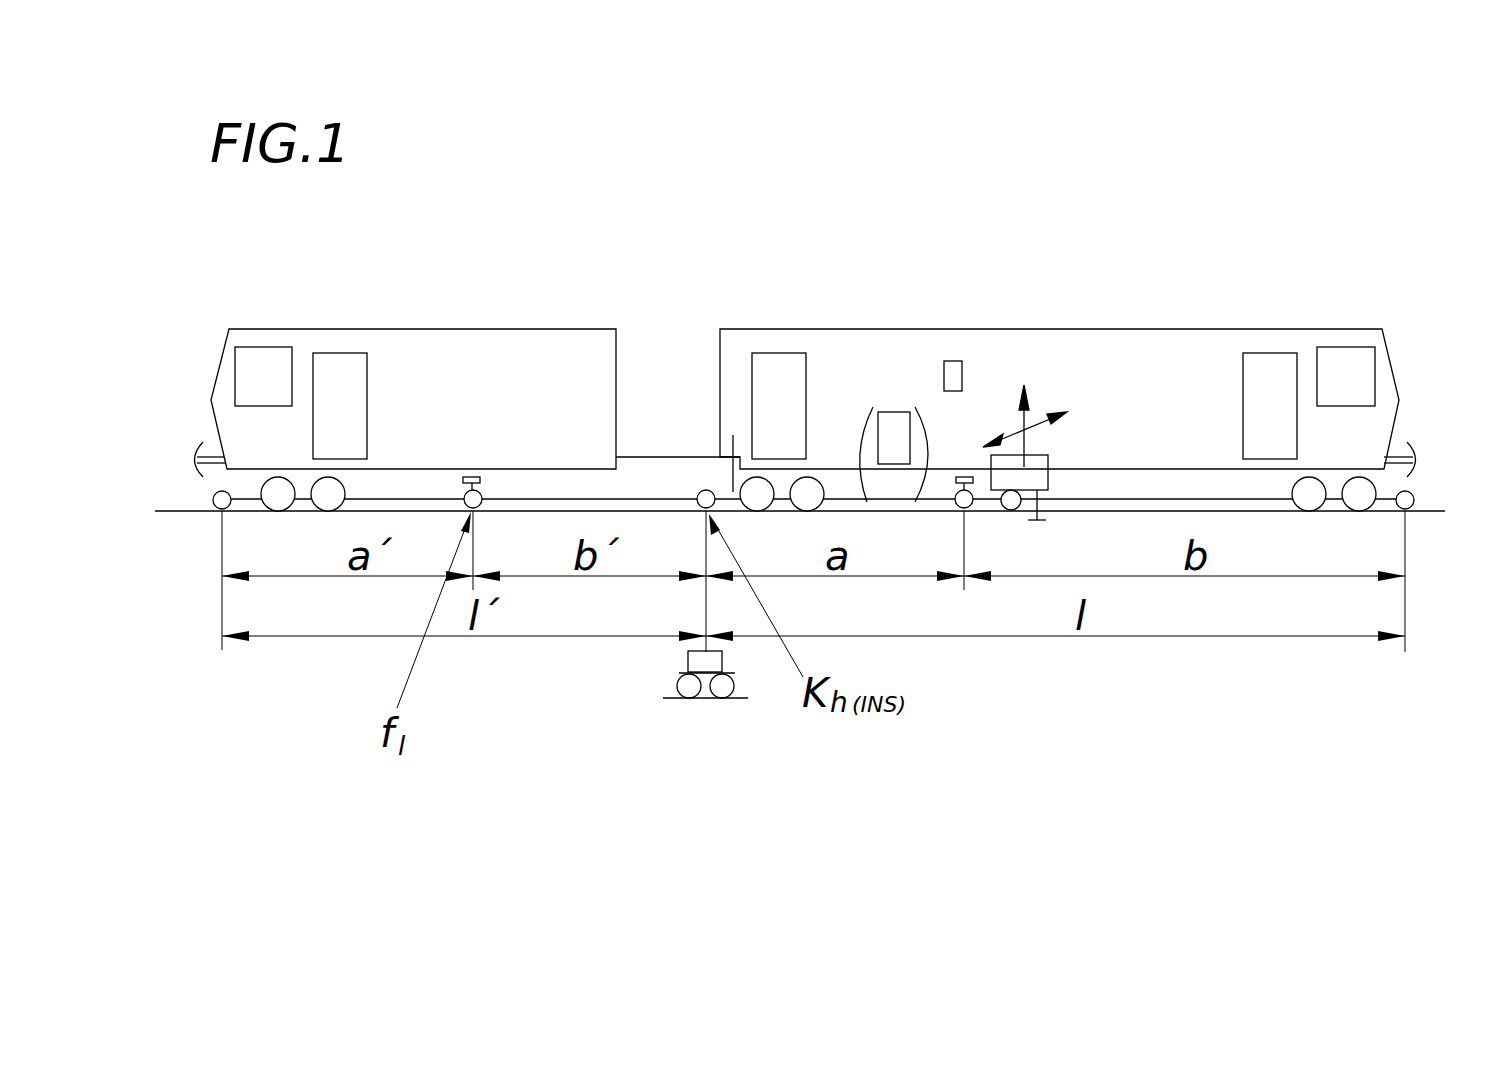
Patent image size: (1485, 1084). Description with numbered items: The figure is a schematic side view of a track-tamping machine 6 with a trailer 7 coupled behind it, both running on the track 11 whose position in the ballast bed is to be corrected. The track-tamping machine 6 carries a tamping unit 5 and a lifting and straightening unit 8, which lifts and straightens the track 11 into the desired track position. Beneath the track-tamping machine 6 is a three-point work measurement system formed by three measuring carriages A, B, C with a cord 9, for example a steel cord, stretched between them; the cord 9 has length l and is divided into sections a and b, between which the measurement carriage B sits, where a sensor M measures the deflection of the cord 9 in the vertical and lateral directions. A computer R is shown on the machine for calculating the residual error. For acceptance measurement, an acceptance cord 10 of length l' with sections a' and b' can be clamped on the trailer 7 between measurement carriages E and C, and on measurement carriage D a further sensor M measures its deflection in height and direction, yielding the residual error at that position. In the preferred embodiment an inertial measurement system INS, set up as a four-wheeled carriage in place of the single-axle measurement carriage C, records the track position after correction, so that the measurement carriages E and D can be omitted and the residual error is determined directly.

The tamping unit 5 is at (891, 424).
The track-tamping machine 6 is at (1130, 362).
The trailer 7 is at (468, 362).
The lifting and straightening unit 8 is at (1033, 464).
The cord 9 is at (1208, 498).
The acceptance cord 10 is at (549, 498).
The track 11 is at (172, 512).
The sensor M is at (467, 472).
The computer R is at (951, 370).
The measurement carriage D is at (466, 492).
The measurement carriage C is at (705, 502).
The measurement carriage B is at (962, 500).
The measurement carriage A is at (1407, 503).
The measurement carriage E is at (220, 503).
The inertial measurement system INS is at (698, 662).